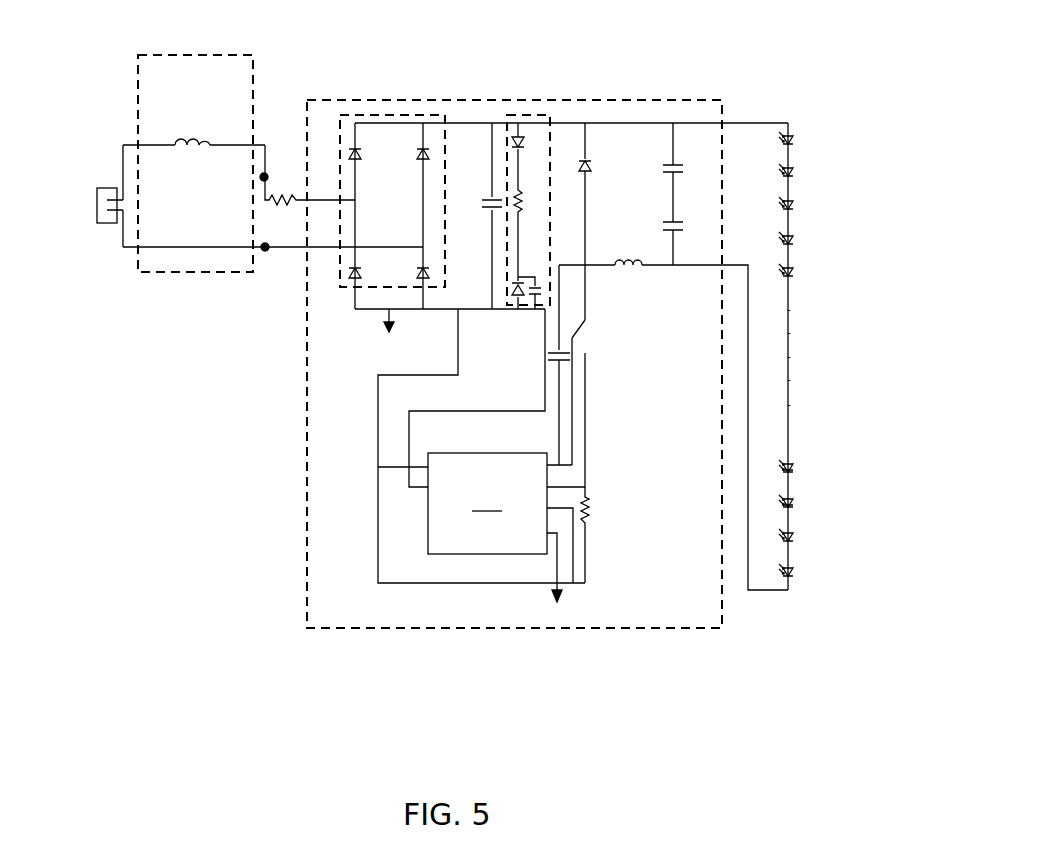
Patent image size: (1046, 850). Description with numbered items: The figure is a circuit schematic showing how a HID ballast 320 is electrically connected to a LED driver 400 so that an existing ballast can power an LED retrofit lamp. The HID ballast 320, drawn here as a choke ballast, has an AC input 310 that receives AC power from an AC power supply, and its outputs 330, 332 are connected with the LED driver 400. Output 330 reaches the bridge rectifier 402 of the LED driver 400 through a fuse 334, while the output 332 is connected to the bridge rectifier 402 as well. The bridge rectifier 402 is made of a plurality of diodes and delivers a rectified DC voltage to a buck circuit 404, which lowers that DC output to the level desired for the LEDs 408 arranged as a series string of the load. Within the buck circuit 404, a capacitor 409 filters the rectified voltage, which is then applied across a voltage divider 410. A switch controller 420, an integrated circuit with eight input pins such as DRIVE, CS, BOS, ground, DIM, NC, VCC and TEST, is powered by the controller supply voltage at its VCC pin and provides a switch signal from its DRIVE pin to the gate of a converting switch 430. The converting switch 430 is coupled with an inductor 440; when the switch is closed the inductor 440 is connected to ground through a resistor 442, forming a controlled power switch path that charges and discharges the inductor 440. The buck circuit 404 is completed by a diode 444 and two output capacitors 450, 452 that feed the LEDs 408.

The AC input 310 is at (97, 200).
The HID ballast 320 is at (138, 80).
The output 330 is at (264, 173).
The output 332 is at (265, 253).
The fuse 334 is at (309, 215).
The LED driver 400 is at (405, 100).
The bridge rectifier 402 is at (418, 115).
The buck circuit 404 is at (612, 88).
The LEDs 408 is at (811, 232).
The capacitor 409 is at (476, 216).
The voltage divider 410 is at (527, 115).
The switch controller 420 is at (481, 455).
The converting switch 430 is at (594, 376).
The inductor 440 is at (673, 410).
The resistor 442 is at (609, 535).
The diode 444 is at (607, 221).
The output capacitor 450 is at (689, 172).
The output capacitor 452 is at (689, 236).